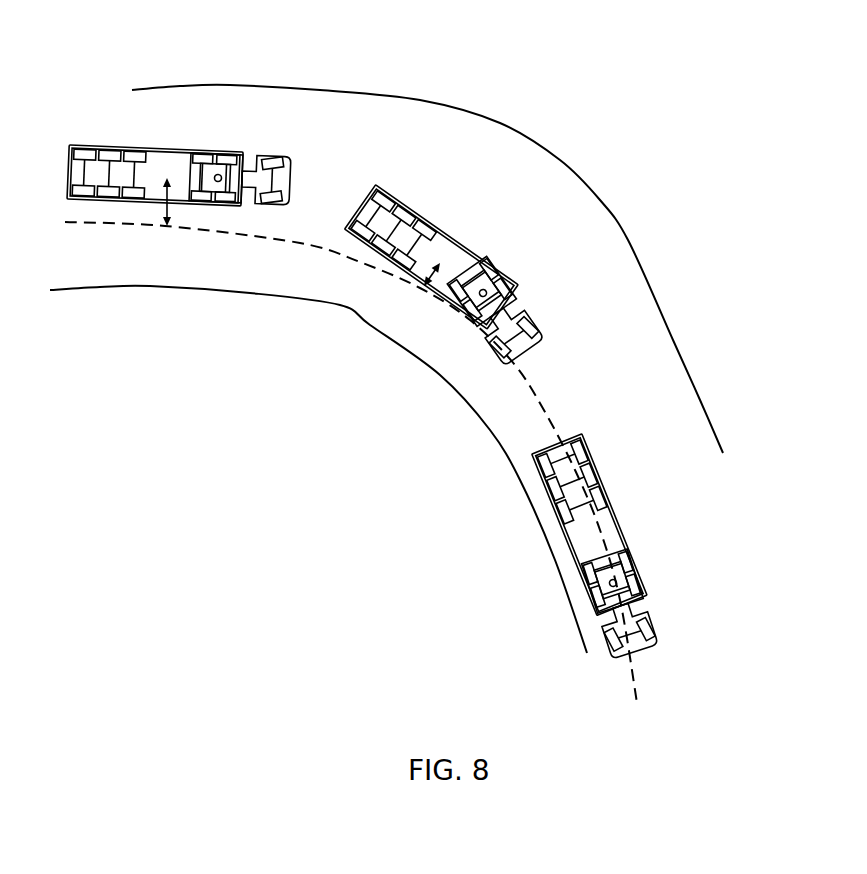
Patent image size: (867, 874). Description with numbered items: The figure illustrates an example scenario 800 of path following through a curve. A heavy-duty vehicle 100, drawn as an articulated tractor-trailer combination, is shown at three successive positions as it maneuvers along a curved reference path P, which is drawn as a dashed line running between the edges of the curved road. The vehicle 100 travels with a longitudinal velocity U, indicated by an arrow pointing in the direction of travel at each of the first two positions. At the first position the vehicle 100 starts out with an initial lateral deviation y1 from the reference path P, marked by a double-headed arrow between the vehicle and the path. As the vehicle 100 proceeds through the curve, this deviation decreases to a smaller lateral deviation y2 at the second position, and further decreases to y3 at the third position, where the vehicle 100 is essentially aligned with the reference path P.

The heavy-duty vehicle 100 is at (285, 157).
The example scenario 800 is at (688, 72).
The reference path P is at (305, 244).
The longitudinal velocity U is at (290, 183).
The initial lateral deviation y1 is at (166, 214).
The lateral deviation y2 is at (436, 293).
The lateral deviation y3 is at (592, 533).